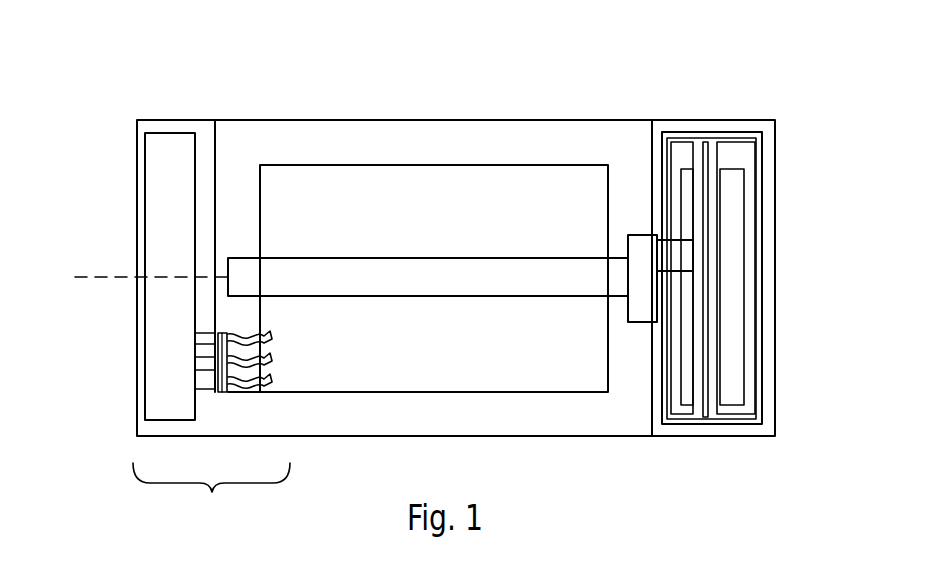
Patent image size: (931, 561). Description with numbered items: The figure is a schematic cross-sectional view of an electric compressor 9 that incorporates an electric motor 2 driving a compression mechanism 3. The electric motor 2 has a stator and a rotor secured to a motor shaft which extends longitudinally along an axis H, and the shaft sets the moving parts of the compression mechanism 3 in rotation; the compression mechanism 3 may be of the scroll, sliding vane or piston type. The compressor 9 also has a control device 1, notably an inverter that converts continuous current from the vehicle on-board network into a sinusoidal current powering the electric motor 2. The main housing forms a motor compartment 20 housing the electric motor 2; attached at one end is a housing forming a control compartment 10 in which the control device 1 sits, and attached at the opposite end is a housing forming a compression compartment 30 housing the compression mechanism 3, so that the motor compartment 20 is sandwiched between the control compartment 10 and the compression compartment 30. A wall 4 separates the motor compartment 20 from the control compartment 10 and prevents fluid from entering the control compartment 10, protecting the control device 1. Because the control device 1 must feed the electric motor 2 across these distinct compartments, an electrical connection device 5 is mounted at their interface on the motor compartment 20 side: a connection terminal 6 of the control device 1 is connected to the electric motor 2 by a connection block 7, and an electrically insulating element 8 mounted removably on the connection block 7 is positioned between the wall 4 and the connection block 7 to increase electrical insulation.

The control device 1 is at (160, 263).
The electric motor 2 is at (413, 200).
The compression mechanism 3 is at (728, 283).
The wall 4 is at (215, 167).
The electrical connection device 5 is at (211, 492).
The connection terminal 6 is at (205, 393).
The connection block 7 is at (228, 393).
The electrically insulating element 8 is at (220, 393).
The electric compressor 9 is at (548, 69).
The control compartment 10 is at (137, 158).
The motor compartment 20 is at (293, 126).
The compression compartment 30 is at (697, 120).
The axis H is at (151, 265).